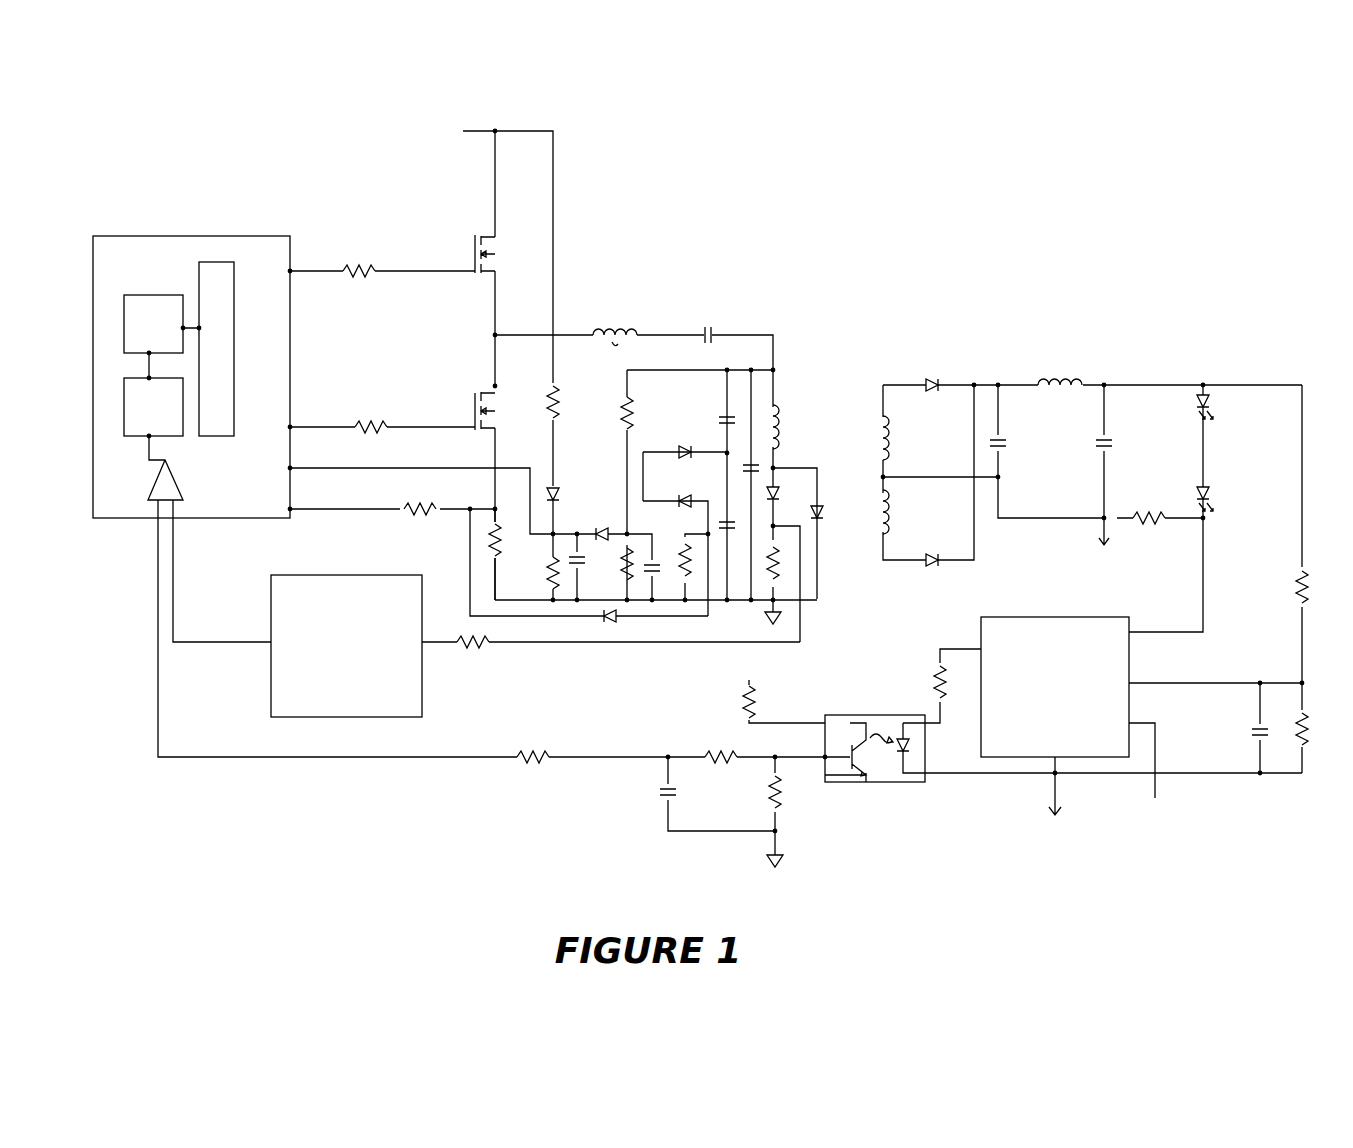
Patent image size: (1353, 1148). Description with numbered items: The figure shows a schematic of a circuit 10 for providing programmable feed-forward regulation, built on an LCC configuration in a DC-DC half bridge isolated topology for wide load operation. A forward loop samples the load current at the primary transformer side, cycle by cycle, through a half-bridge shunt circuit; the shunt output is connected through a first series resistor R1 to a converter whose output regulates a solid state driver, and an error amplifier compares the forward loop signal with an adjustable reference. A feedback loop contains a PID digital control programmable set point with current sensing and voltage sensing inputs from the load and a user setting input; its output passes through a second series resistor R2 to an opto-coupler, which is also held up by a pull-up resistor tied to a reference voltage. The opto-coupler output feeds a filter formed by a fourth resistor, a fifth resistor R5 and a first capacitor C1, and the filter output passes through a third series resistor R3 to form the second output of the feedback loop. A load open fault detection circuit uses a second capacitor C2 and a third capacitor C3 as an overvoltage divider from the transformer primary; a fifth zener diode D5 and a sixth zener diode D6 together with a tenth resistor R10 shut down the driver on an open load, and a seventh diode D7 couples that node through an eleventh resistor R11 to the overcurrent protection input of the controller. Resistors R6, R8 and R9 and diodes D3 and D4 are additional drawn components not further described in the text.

The circuit for providing programmable feed-forward regulation 10 is at (222, 100).
The first series resistor R1 is at (611, 652).
The second series resistor R2 is at (922, 676).
The third series resistor R3 is at (592, 748).
The fifth resistor R5 is at (746, 748).
The resistor R6 is at (643, 452).
The resistor R8 is at (570, 410).
The resistor R9 is at (512, 554).
The tenth resistor R10 is at (681, 557).
The eleventh resistor R11 is at (392, 504).
The first capacitor C1 is at (717, 794).
The second capacitor C2 is at (701, 411).
The third capacitor C3 is at (734, 526).
The diode D3 is at (599, 525).
The diode D4 is at (572, 515).
The fifth zener diode D5 is at (685, 465).
The sixth zener diode D6 is at (675, 548).
The seventh diode D7 is at (589, 572).